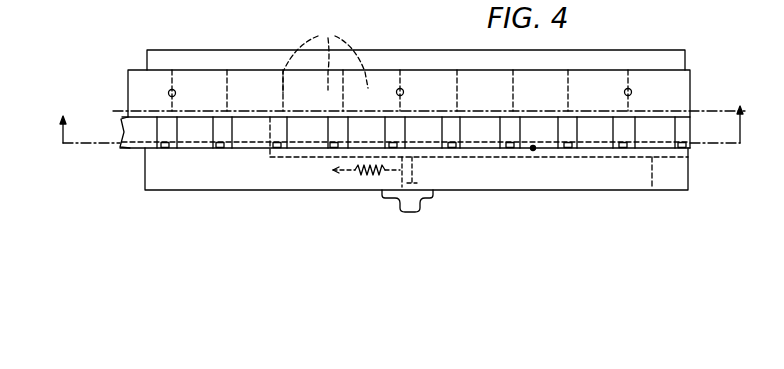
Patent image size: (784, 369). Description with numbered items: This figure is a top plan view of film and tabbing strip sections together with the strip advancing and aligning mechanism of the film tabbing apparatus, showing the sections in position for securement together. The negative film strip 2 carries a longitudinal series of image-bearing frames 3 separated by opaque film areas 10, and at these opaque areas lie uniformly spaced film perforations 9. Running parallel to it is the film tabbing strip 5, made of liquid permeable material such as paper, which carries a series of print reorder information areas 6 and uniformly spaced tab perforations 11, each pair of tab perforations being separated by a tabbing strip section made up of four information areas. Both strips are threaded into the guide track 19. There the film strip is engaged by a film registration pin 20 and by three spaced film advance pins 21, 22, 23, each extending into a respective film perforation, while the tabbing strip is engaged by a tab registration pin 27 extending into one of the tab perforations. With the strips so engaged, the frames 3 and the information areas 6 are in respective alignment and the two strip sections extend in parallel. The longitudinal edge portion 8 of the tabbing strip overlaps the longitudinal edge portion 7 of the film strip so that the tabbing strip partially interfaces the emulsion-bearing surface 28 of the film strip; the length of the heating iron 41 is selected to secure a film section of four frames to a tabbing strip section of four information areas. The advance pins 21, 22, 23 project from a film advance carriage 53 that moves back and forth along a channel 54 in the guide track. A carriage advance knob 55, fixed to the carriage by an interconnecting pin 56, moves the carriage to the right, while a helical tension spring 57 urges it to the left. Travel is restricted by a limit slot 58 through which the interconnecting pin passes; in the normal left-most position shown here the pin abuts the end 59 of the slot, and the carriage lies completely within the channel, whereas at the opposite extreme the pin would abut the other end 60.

The negative film strip 2 is at (533, 150).
The image-bearing frames 3 is at (316, 132).
The film tabbing strip 5 is at (682, 86).
The print reorder information areas 6 is at (401, 81).
The longitudinal edge portion of the film strip 7 is at (167, 110).
The longitudinal edge portion of the tabbing strip 8 is at (136, 119).
The film perforations 9 is at (166, 150).
The opaque film areas 10 is at (277, 132).
The tab perforations 11 is at (169, 91).
The guide track 19 is at (256, 52).
The film registration pin 20 is at (220, 147).
The film advance pin 21 is at (512, 146).
The film advance pin 22 is at (573, 148).
The film advance pin 23 is at (627, 147).
The tab registration pin 27 is at (624, 92).
The emulsion-bearing surface 28 is at (481, 125).
The heating iron 41 is at (672, 110).
The film advance carriage 53 is at (553, 153).
The channel 54 is at (680, 152).
The carriage advance knob 55 is at (395, 200).
The interconnecting pin 56 is at (383, 187).
The helical tension spring 57 is at (350, 178).
The limit slot 58 is at (472, 183).
The end of the limit slot 59 is at (402, 178).
The end of the limit slot 60 is at (646, 172).